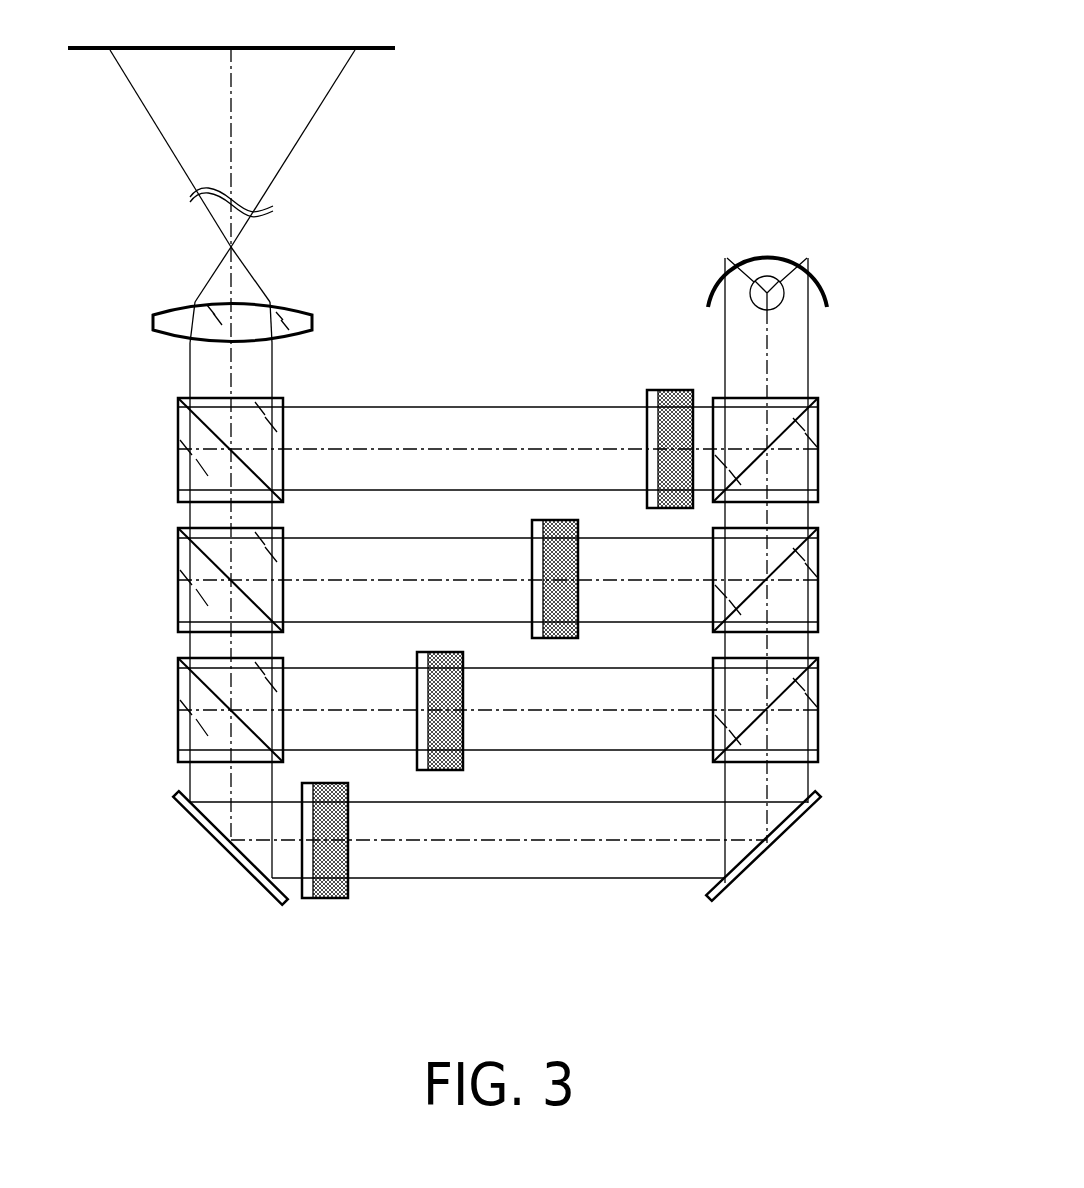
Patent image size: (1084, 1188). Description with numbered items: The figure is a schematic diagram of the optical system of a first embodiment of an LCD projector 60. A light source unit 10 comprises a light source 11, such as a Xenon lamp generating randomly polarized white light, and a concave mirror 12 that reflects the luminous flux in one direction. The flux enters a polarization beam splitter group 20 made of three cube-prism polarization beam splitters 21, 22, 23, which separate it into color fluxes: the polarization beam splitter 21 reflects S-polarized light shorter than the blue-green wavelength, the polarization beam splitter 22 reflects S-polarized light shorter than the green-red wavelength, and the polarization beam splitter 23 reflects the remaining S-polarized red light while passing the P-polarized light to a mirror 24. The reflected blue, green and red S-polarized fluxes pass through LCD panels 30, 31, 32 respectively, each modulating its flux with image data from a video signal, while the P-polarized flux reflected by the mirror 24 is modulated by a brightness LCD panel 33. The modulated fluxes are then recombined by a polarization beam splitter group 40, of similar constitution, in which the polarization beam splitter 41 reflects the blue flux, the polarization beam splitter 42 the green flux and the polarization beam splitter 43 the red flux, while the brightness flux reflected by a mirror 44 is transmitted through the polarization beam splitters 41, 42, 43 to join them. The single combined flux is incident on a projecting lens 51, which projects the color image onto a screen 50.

The light source unit 10 is at (646, 258).
The light source 11 is at (757, 309).
The concave mirror 12 is at (713, 278).
The polarization beam splitter group 20 is at (883, 423).
The polarization beam splitter 21 is at (818, 452).
The polarization beam splitter 22 is at (818, 580).
The polarization beam splitter 23 is at (818, 708).
The mirror 24 is at (750, 865).
The LCD panel 30 is at (667, 437).
The LCD panel 31 is at (547, 570).
The LCD panel 32 is at (435, 700).
The brightness LCD panel 33 is at (343, 828).
The polarization beam splitter group 40 is at (125, 423).
The polarization beam splitter 41 is at (178, 455).
The polarization beam splitter 42 is at (178, 580).
The polarization beam splitter 43 is at (177, 708).
The mirror 44 is at (242, 867).
The screen 50 is at (378, 52).
The projecting lens 51 is at (293, 306).
The LCD projector 60 is at (473, 292).